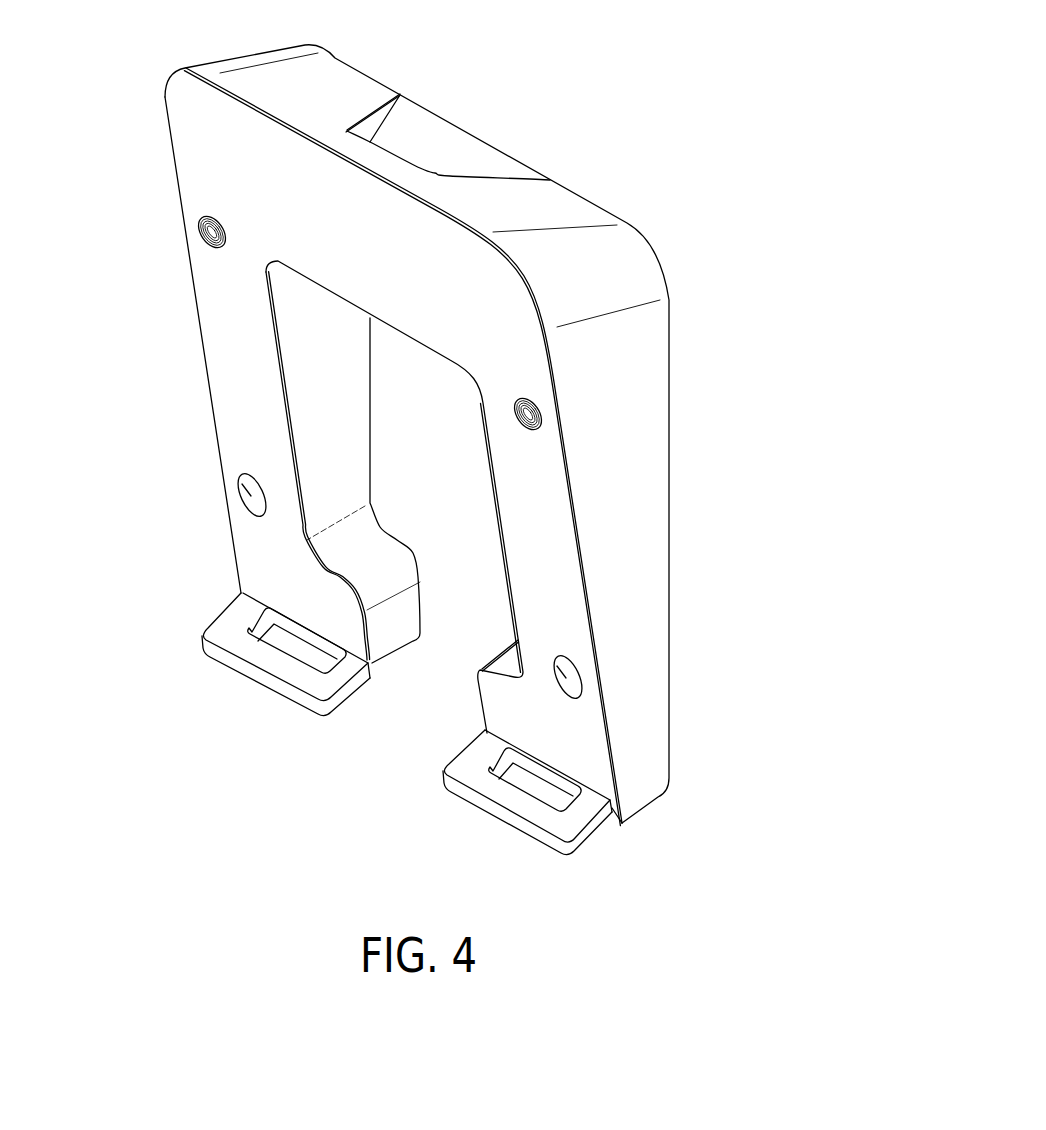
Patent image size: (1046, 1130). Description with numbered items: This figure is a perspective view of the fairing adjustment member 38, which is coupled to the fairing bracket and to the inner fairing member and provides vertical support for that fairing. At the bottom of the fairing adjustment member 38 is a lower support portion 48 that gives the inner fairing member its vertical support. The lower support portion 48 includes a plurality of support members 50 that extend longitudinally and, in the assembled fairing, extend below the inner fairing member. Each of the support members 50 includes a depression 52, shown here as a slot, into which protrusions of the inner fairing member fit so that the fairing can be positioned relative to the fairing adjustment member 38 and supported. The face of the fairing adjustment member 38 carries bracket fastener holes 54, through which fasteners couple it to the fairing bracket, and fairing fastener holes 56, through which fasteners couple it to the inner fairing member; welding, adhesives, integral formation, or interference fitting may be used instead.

The fairing adjustment member 38 is at (657, 111).
The lower support portion 48 is at (423, 725).
The support members 50 is at (407, 724).
The depressions 52 is at (335, 655).
The bracket fastener holes 54 is at (413, 456).
The fairing fastener holes 56 is at (250, 498).